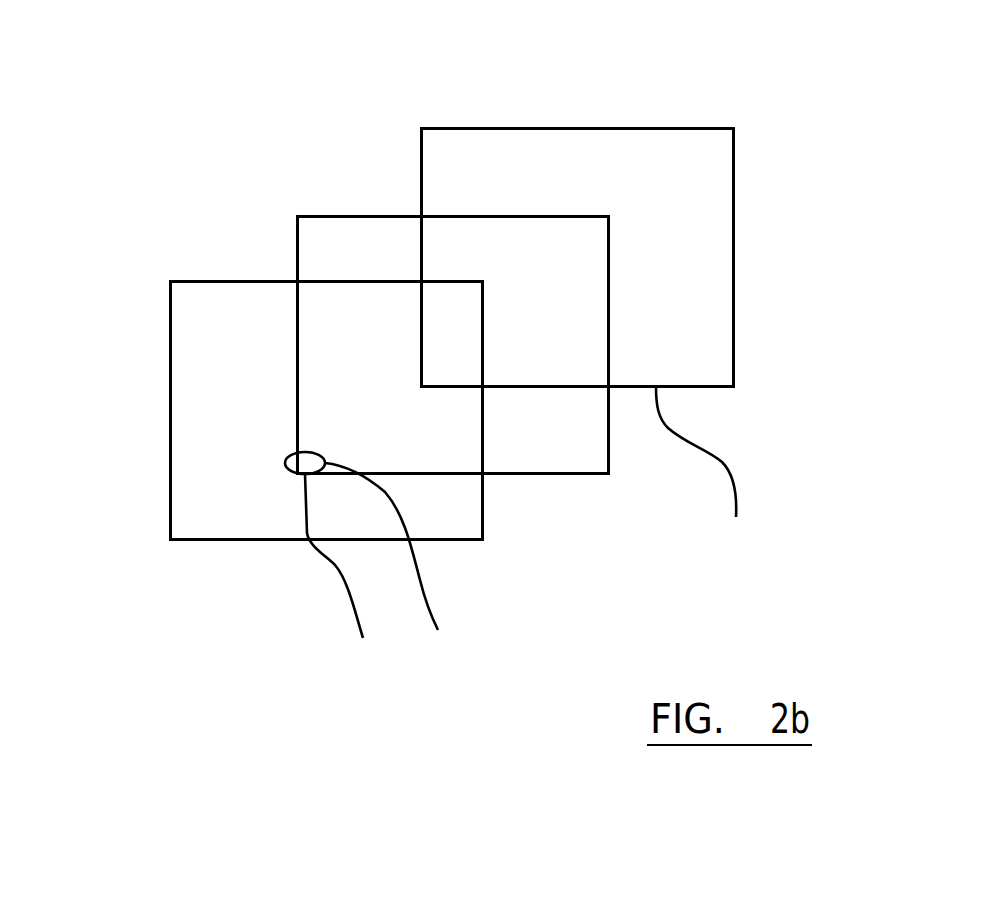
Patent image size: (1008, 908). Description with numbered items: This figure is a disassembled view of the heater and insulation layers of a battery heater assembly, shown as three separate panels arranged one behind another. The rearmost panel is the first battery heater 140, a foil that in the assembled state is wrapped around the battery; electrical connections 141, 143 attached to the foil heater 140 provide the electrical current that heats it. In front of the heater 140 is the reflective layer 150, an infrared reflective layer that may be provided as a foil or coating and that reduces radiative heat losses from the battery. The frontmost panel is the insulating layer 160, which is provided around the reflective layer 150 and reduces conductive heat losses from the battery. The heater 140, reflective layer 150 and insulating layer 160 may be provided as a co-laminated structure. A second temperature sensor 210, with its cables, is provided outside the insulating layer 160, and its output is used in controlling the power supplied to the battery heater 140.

The first battery heater 140 is at (707, 275).
The electrical connection 141 is at (727, 472).
The electrical connection 143 is at (577, 128).
The reflective layer 150 is at (563, 450).
The insulating layer 160 is at (202, 428).
The second temperature sensor 210 is at (297, 467).